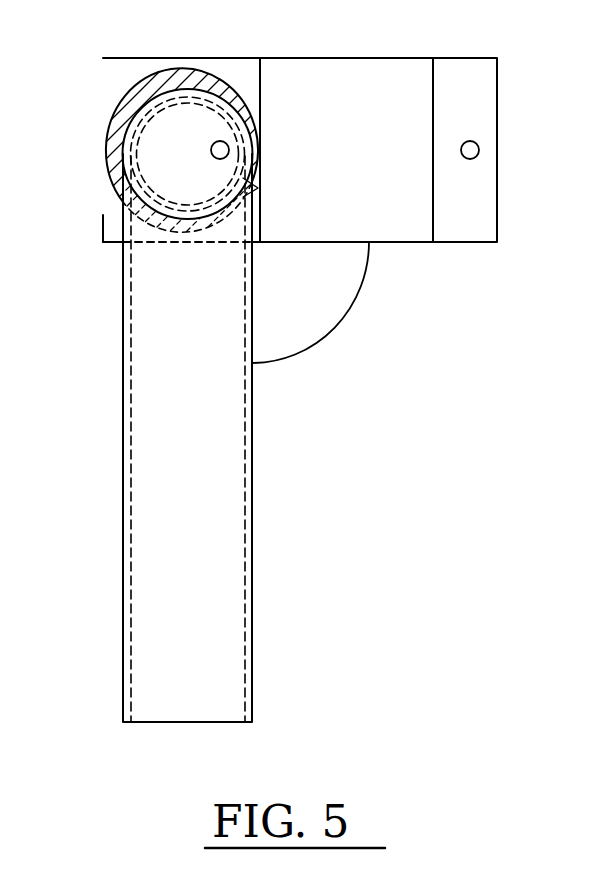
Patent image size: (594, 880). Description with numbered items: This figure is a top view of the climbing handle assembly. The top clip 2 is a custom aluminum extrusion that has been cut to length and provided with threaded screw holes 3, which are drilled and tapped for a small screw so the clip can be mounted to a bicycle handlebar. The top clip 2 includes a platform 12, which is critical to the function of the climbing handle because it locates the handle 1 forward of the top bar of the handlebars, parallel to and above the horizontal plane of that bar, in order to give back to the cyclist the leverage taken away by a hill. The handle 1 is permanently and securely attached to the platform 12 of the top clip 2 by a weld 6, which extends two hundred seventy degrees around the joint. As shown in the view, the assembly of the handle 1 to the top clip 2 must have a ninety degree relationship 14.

The handle 1 is at (252, 490).
The top clip 2 is at (418, 58).
The screw holes 3 is at (229, 147).
The weld 6 is at (163, 70).
The platform 12 is at (102, 228).
The 90 degree relationship 14 is at (316, 302).